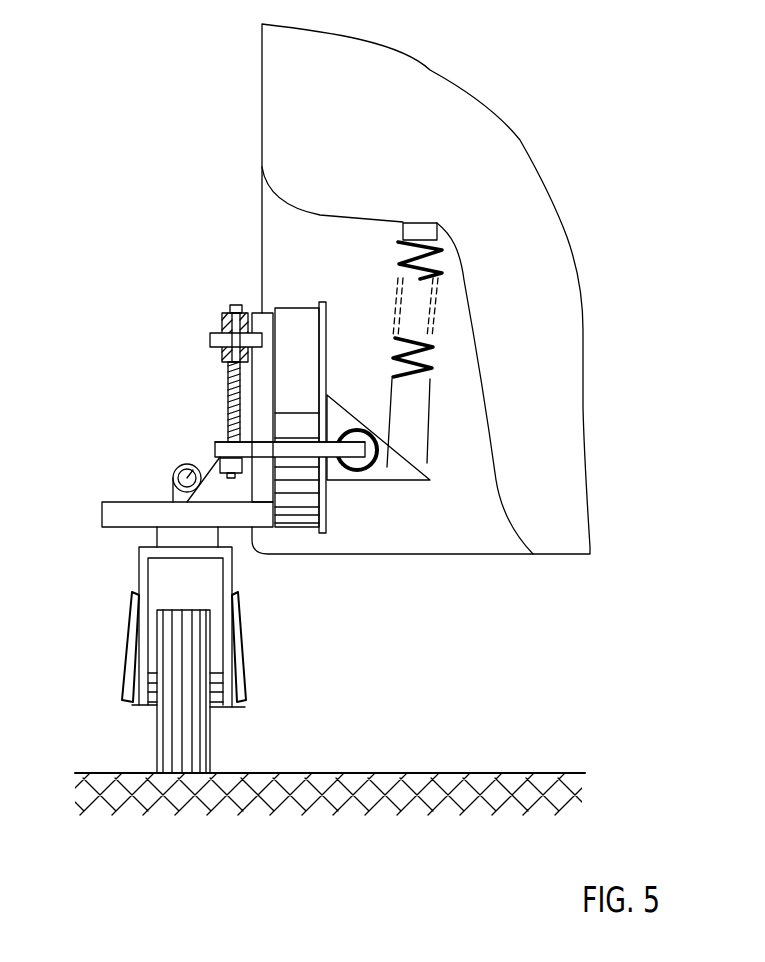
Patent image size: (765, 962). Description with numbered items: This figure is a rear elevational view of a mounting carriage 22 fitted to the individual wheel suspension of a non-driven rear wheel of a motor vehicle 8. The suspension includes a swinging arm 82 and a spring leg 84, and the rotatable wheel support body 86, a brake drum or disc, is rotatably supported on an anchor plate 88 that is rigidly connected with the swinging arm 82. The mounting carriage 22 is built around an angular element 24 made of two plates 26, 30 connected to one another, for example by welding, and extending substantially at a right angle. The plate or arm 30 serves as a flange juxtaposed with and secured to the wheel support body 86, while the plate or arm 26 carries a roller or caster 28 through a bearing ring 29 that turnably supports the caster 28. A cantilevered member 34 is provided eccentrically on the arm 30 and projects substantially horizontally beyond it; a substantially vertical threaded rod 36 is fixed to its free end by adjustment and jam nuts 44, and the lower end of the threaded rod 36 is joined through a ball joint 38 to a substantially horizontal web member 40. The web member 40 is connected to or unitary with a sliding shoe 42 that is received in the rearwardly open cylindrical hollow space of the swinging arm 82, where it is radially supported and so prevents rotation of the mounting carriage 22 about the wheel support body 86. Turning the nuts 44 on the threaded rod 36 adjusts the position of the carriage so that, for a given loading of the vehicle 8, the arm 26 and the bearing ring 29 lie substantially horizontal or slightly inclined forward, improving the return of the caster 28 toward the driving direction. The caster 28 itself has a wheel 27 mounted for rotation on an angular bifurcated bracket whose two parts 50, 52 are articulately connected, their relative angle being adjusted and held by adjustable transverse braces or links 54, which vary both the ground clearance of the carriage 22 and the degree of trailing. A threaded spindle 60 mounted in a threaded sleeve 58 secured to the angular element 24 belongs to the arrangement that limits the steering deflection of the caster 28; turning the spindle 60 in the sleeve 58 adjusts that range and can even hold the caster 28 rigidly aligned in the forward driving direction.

The motor vehicle 8 is at (565, 243).
The mounting carriage 22 is at (100, 533).
The angular element 24 is at (262, 522).
The plate or arm 26 is at (127, 517).
The wheel 27 is at (168, 738).
The roller or caster 28 is at (139, 570).
The bearing ring 29 is at (167, 537).
The plate or arm 30 is at (262, 312).
The cantilevered member 34 is at (233, 306).
The threaded rod 36 is at (228, 388).
The ball joint 38 is at (228, 437).
The web member 40 is at (288, 450).
The sliding shoe 42 is at (380, 457).
The adjustment and jam nuts 44 is at (217, 347).
The bracket part 50 is at (218, 553).
The bracket part 52 is at (233, 707).
The adjustable transverse braces or links 54 is at (125, 645).
The threaded sleeve 58 is at (172, 483).
The threaded spindle 60 is at (175, 464).
The swinging arm 82 is at (357, 428).
The spring leg 84 is at (412, 402).
The wheel support body 86 is at (303, 333).
The anchor plate 88 is at (326, 305).